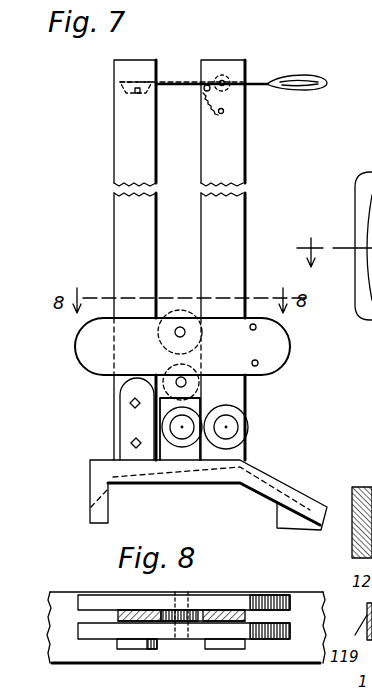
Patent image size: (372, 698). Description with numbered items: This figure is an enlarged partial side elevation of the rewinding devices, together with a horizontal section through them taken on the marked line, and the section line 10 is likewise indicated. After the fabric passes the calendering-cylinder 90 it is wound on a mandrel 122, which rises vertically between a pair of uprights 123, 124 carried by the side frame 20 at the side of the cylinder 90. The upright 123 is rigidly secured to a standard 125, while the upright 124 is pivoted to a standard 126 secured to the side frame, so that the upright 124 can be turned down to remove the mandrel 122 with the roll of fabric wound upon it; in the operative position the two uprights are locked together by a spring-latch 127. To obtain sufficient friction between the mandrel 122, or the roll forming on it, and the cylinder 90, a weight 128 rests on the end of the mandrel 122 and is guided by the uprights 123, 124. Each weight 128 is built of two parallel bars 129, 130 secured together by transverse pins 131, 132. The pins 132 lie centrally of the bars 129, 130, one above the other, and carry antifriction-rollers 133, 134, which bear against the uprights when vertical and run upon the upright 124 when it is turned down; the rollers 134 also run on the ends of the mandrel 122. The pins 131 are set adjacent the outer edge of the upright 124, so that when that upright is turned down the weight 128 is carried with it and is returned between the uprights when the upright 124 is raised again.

In FIG. 7, the section line 10 10 is at (322, 252).
In FIG. 8, the side frame 20 is at (299, 595).
In FIG. 7, the calendering-cylinder 90 is at (265, 495).
In FIG. 7, the mandrel 122 is at (180, 426).
In FIG. 7, the upright 123 is at (123, 267).
In FIG. 8, the upright 123 is at (136, 609).
In FIG. 7, the upright 124 is at (237, 218).
In FIG. 8, the upright 124 is at (220, 622).
In FIG. 7, the standard 125 is at (127, 428).
In FIG. 8, the standard 125 is at (135, 641).
In FIG. 7, the standard 126 is at (241, 448).
In FIG. 8, the standard 126 is at (232, 641).
In FIG. 7, the spring-latch 127 is at (180, 92).
In FIG. 7, the weight 128 is at (283, 352).
In FIG. 8, the bar 129 is at (110, 598).
In FIG. 8, the bar 130 is at (100, 629).
In FIG. 7, the transverse pin 131 is at (256, 327).
In FIG. 7, the transverse pin 132 is at (180, 381).
In FIG. 8, the transverse pin 132 is at (185, 602).
In FIG. 7, the antifriction-roller 133 is at (176, 313).
In FIG. 8, the antifriction-roller 133 is at (180, 622).
In FIG. 7, the antifriction-roller 134 is at (177, 402).